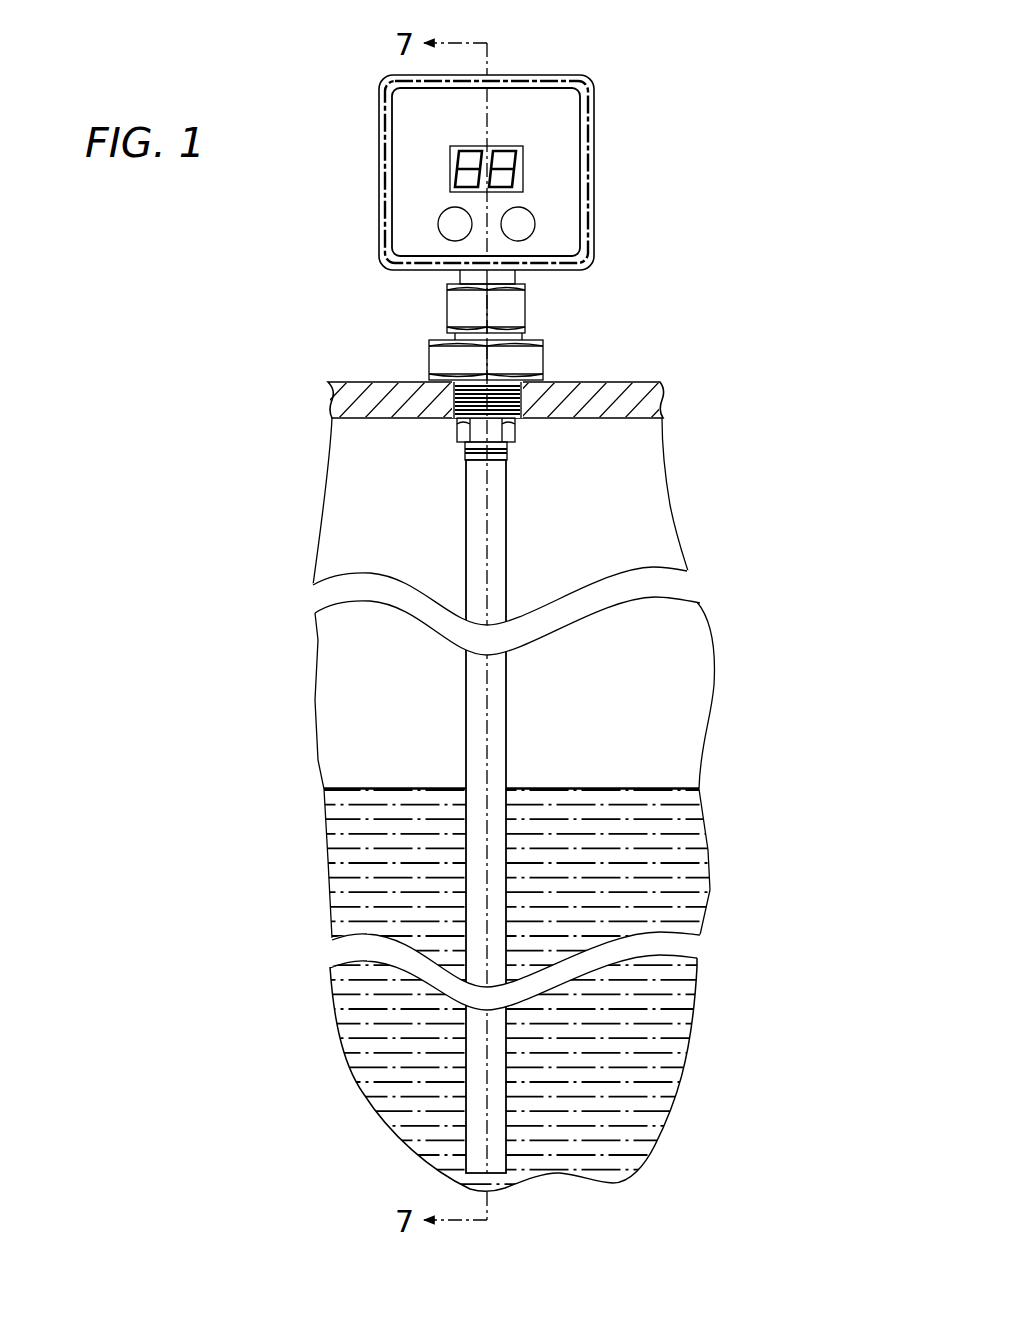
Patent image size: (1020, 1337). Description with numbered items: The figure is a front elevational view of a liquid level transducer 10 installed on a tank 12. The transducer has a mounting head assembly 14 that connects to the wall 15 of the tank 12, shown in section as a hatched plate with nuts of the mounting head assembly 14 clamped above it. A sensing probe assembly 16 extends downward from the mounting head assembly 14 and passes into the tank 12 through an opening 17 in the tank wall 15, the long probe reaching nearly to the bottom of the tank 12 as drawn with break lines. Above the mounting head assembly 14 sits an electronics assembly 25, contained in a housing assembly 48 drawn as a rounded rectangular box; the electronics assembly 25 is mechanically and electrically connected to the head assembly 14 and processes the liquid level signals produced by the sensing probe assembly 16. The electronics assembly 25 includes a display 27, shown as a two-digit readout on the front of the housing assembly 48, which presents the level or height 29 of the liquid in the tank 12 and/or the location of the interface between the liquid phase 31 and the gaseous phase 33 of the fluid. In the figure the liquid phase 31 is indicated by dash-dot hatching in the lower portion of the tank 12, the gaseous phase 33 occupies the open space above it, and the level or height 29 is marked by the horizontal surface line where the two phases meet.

The liquid level transducer 10 is at (678, 240).
The tank 12 is at (633, 382).
The mounting head assembly 14 is at (550, 345).
The wall 15 is at (378, 393).
The sensing probe assembly 16 is at (510, 525).
The opening 17 is at (448, 420).
The electronics assembly 25 is at (588, 172).
The display 27 is at (450, 170).
The level or height 29 is at (355, 788).
The liquid phase 31 is at (362, 900).
The gaseous phase 33 is at (347, 688).
The housing assembly 48 is at (594, 98).